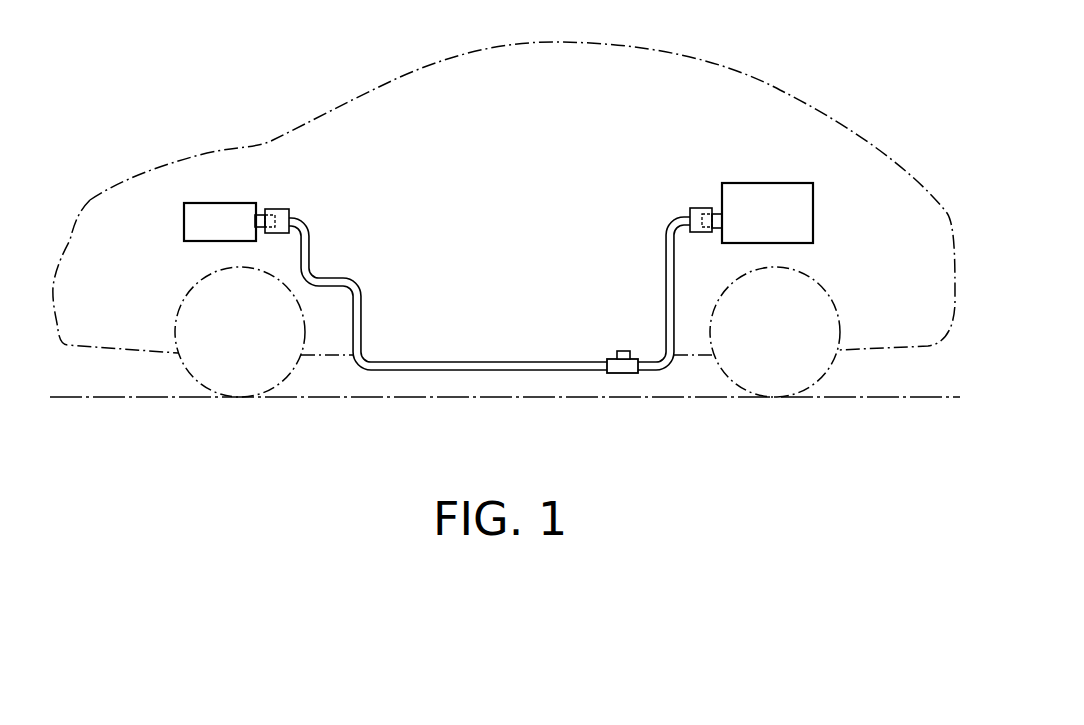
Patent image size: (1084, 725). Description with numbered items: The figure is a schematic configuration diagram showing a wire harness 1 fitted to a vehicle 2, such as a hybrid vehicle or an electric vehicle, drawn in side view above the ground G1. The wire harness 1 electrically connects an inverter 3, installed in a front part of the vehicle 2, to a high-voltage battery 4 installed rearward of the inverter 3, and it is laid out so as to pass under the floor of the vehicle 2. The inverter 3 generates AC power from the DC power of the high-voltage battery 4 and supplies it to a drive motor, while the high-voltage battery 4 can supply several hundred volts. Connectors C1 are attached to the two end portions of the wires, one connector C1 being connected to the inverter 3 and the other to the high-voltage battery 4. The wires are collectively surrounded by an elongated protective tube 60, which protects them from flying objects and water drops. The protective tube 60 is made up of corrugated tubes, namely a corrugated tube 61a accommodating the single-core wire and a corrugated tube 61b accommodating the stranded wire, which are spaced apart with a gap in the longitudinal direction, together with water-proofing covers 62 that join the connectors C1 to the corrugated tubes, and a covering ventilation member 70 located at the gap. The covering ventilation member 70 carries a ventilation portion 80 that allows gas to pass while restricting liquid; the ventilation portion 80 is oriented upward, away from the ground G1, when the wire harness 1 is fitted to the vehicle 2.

The wire harness 1 is at (692, 167).
The vehicle 2 is at (735, 70).
The inverter 3 is at (200, 203).
The high-voltage battery 4 is at (772, 183).
The protective tube 60 is at (495, 332).
The corrugated tube 61a is at (508, 371).
The corrugated tube 61b is at (668, 371).
The water-proofing cover 62 is at (284, 210).
The covering ventilation member 70 is at (627, 373).
The ventilation portion 80 is at (622, 351).
The connector C1 is at (262, 214).
The ground G1 is at (887, 397).